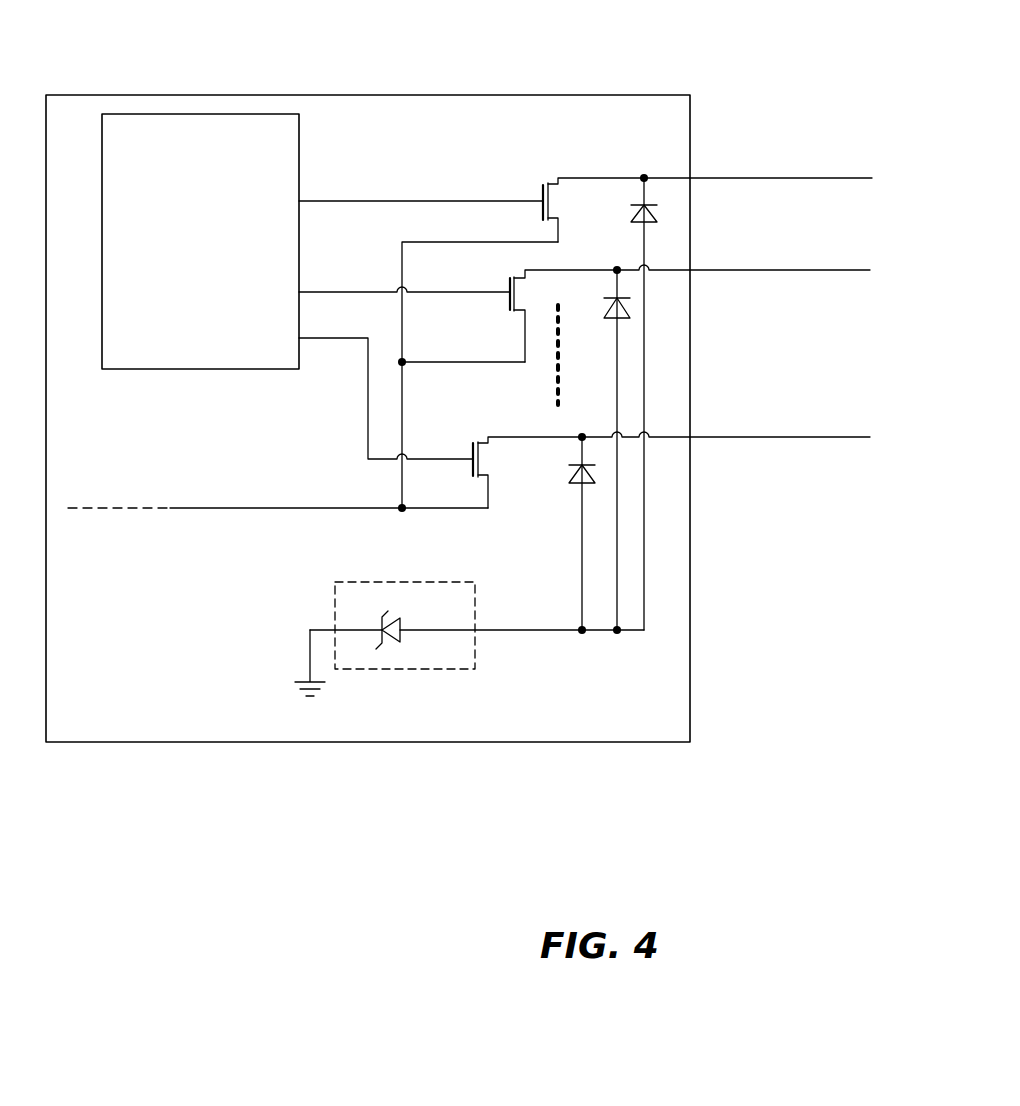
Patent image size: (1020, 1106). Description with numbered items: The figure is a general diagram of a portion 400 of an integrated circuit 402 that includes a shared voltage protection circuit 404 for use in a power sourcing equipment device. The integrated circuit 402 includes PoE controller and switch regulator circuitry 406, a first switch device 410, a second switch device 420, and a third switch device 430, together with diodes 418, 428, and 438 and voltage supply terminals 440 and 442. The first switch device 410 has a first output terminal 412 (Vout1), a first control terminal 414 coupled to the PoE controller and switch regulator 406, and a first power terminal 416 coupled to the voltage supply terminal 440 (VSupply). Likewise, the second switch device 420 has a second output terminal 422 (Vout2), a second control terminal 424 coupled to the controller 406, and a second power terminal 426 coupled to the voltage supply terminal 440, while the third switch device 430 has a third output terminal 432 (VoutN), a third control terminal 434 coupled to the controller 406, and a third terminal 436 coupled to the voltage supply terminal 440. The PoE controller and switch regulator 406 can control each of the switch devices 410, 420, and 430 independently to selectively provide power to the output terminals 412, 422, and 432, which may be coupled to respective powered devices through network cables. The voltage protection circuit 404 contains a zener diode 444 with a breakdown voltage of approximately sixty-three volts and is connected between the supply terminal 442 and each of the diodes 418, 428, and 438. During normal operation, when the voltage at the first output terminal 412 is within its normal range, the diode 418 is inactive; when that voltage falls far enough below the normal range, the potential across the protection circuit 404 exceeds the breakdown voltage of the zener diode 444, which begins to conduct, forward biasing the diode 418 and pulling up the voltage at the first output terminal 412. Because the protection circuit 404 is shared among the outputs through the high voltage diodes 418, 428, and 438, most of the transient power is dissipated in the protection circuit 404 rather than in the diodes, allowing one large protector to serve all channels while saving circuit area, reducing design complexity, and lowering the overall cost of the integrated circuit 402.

The portion of an integrated circuit 400 is at (607, 32).
The integrated circuit 402 is at (427, 95).
The shared voltage protection circuit 404 is at (395, 567).
The PoE controller and switch regulator circuitry 406 is at (300, 147).
The first switch device 410 is at (527, 181).
The first output terminal 412 is at (722, 180).
The first control terminal 414 is at (475, 200).
The first power terminal 416 is at (468, 242).
The first diode 418 is at (628, 221).
The second switch device 420 is at (493, 308).
The second output terminal 422 is at (722, 272).
The second control terminal 424 is at (460, 292).
The second power terminal 426 is at (467, 363).
The second diode 428 is at (604, 317).
The third switch device 430 is at (456, 450).
The third output terminal 432 is at (722, 439).
The third control terminal 434 is at (368, 420).
The third terminal 436 is at (452, 510).
The third diode 438 is at (572, 483).
The voltage supply terminal 440 is at (230, 509).
The voltage supply terminal 442 is at (308, 662).
The zener diode 444 is at (397, 643).